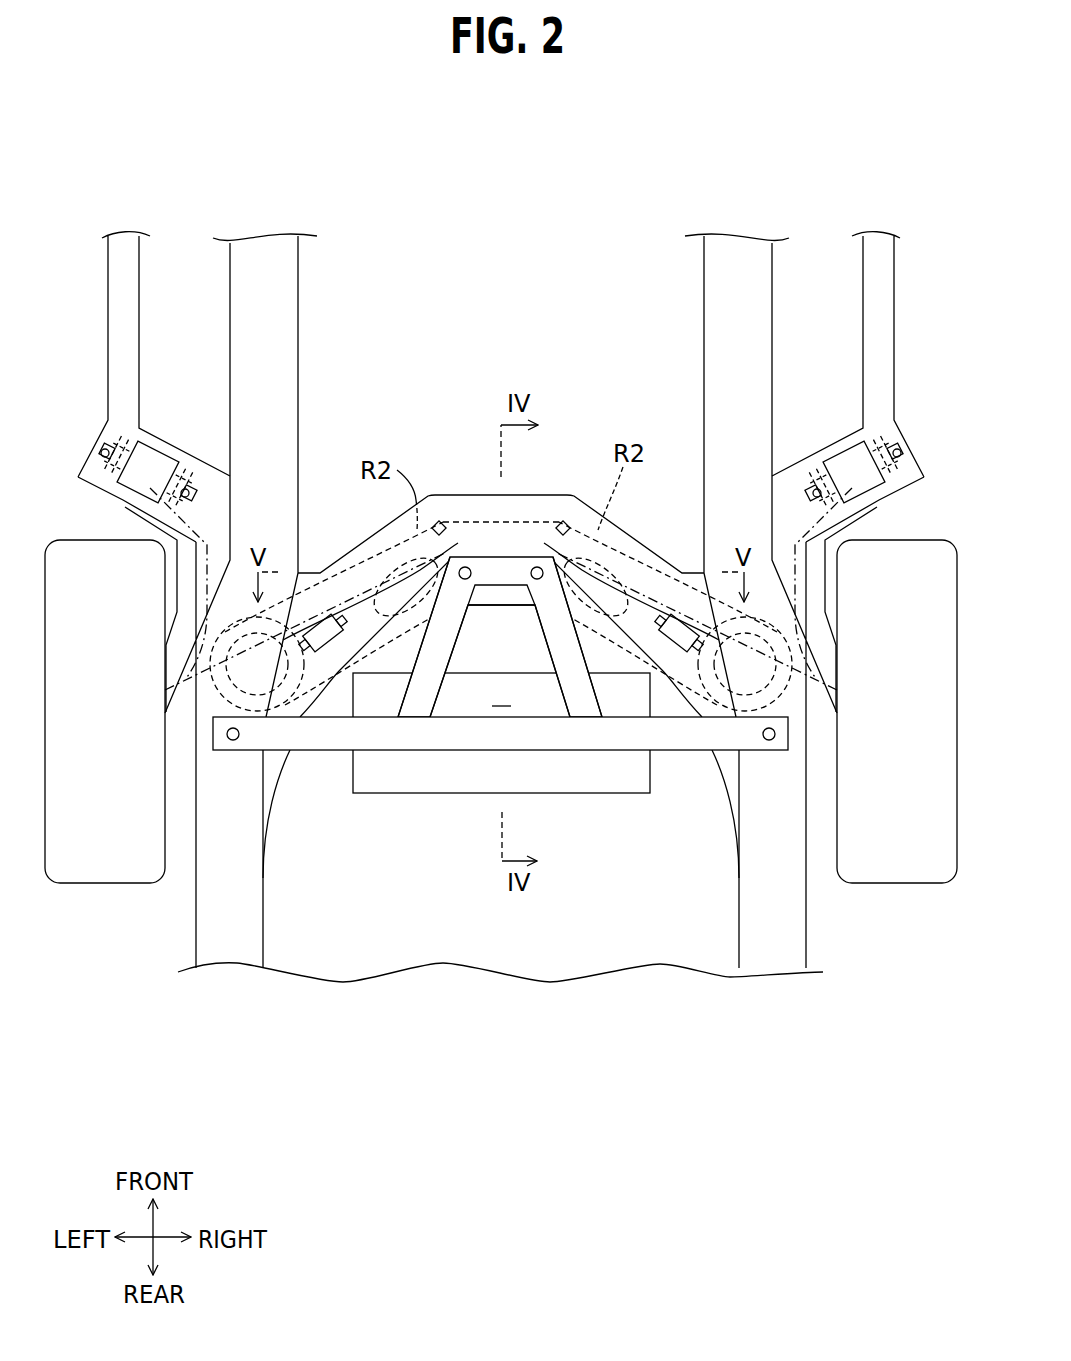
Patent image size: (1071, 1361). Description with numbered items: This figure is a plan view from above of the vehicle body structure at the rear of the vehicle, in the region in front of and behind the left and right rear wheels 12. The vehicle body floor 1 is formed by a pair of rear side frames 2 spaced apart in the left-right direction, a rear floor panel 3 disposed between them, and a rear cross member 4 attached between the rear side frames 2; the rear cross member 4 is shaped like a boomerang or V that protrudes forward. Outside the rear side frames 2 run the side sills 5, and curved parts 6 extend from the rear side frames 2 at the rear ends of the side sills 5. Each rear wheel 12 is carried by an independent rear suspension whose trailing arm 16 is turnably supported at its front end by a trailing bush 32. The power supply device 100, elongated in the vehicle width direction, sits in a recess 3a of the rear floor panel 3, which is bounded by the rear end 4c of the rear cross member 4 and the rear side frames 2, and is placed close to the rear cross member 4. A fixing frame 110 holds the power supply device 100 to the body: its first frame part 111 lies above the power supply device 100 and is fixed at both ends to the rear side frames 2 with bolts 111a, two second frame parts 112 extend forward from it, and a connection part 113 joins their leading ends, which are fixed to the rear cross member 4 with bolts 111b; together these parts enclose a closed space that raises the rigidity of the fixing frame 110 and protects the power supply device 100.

The vehicle body floor 1 is at (643, 988).
The rear side frame 2 is at (248, 914).
The rear floor panel 3 is at (445, 938).
The recess 3a is at (277, 781).
The rear cross member 4 is at (556, 492).
The rear end of the rear cross member 4c is at (383, 642).
The side sill 5 is at (108, 323).
The curved part 6 is at (206, 478).
The rear wheel 12 is at (101, 886).
The trailing arm 16 is at (163, 579).
The trailing bush 32 is at (160, 445).
The power supply device 100 is at (395, 804).
The fixing frame 110 is at (682, 762).
The first frame part 111 is at (500, 702).
The bolt 111a is at (234, 742).
The bolt 111b is at (466, 600).
The second frame part 112 is at (423, 690).
The connection part 113 is at (488, 570).